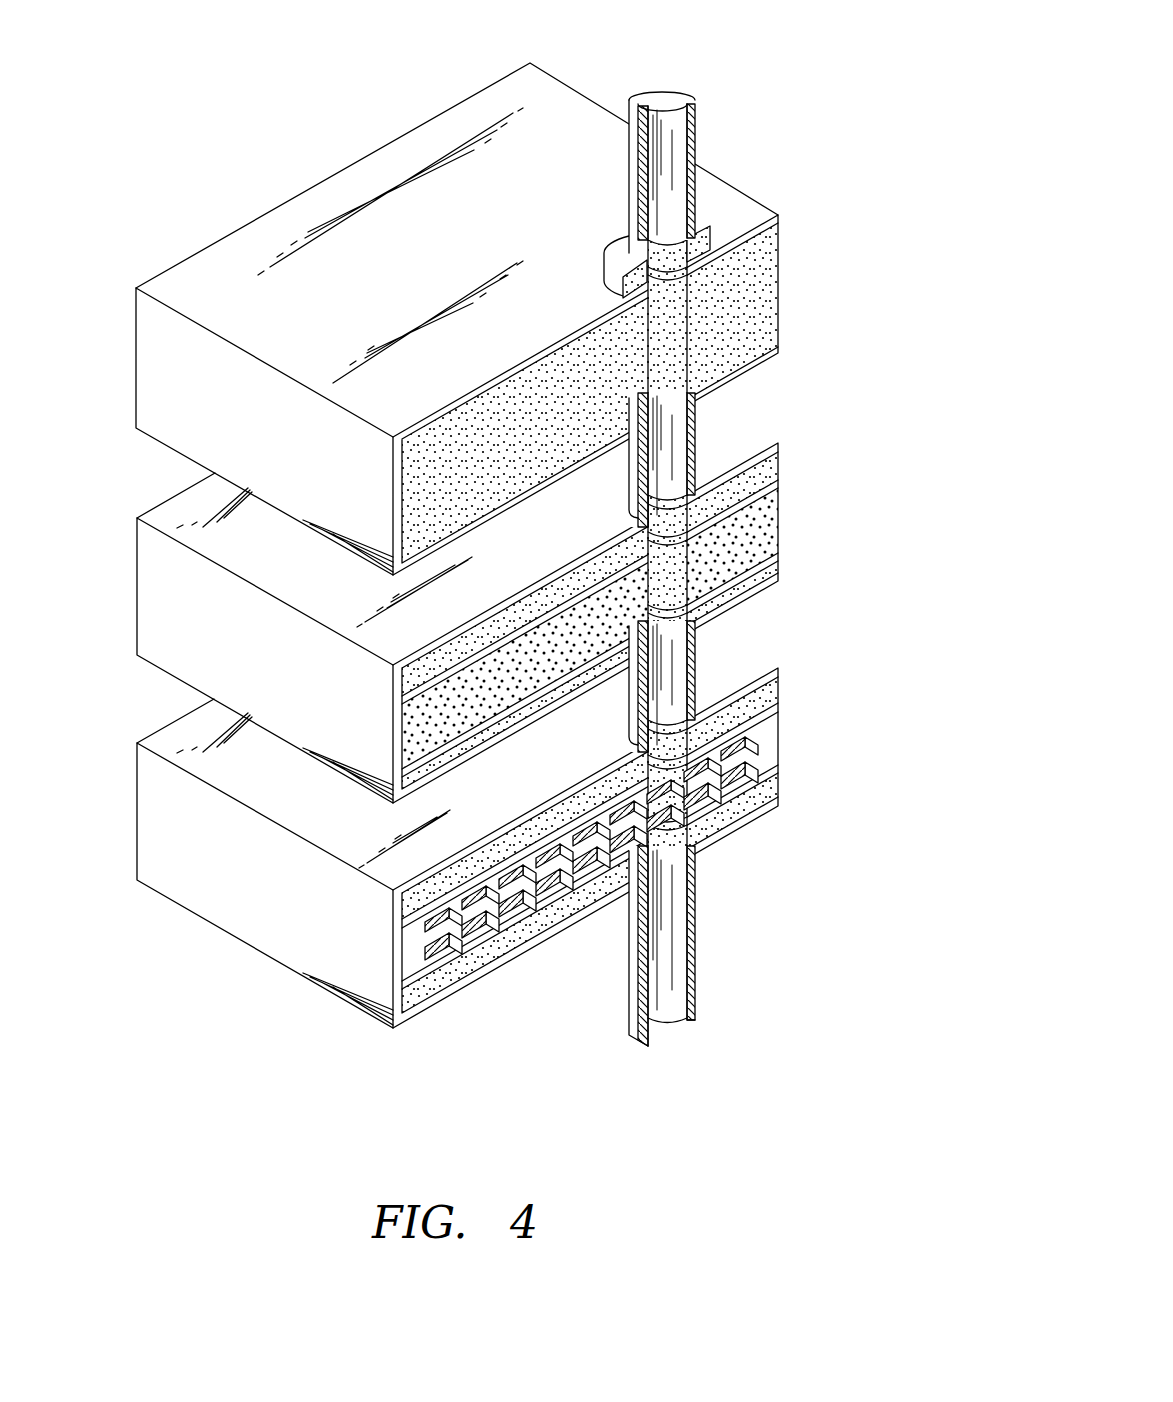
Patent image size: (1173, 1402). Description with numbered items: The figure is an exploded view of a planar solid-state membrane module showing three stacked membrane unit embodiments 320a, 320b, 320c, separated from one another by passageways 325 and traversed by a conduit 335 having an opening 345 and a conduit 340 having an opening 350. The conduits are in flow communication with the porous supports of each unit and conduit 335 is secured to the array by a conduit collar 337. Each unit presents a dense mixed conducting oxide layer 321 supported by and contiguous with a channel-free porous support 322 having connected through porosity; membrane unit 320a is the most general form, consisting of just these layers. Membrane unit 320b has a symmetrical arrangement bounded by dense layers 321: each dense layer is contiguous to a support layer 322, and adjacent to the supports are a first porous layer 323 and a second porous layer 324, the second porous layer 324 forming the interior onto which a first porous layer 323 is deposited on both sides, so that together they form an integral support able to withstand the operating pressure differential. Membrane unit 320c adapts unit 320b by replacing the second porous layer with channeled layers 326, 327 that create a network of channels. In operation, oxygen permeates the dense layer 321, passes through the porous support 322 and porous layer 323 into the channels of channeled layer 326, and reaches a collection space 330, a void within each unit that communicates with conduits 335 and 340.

The membrane unit 320a is at (153, 373).
The membrane unit 320b is at (153, 601).
The membrane unit 320c is at (153, 827).
The dense mixed conducting oxide layer 321 is at (780, 217).
The channel-free porous support 322 is at (760, 294).
The first porous layer 323 is at (780, 484).
The second porous layer 324 is at (760, 525).
The passageways 325 is at (793, 412).
The channeled layer 326 is at (770, 726).
The channeled layer 327 is at (758, 751).
The collection space 330 is at (672, 318).
The conduit 335 is at (697, 130).
The conduit collar 337 is at (705, 232).
The conduit 340 is at (628, 1010).
The opening 345 is at (660, 110).
The opening 350 is at (663, 1008).